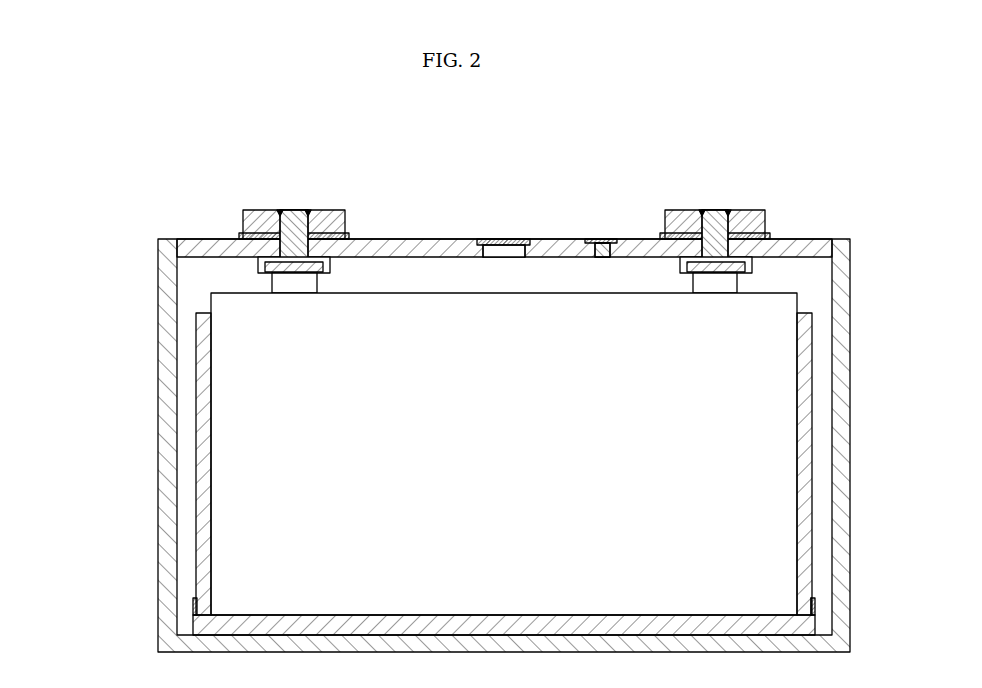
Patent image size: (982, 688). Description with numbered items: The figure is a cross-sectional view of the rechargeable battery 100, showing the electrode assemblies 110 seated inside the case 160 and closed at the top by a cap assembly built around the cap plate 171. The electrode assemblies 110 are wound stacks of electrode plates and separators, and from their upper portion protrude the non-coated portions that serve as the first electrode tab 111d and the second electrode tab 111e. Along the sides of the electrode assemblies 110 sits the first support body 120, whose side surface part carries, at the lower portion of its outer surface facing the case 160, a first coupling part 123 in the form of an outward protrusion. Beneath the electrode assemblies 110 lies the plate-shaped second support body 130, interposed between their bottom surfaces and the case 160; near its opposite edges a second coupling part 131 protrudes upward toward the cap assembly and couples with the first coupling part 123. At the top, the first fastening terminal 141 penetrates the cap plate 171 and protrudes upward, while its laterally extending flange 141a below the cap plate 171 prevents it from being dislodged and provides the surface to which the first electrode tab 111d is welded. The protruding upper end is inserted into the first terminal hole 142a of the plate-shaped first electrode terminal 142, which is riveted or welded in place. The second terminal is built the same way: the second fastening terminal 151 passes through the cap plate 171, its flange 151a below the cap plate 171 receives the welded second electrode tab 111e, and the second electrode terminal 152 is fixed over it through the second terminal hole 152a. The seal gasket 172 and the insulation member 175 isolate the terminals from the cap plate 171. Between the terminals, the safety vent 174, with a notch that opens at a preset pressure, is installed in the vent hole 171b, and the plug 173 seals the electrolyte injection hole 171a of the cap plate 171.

The rechargeable battery 100 is at (546, 379).
The electrode assemblies 110 is at (777, 442).
The first electrode tab 111d is at (730, 285).
The second electrode tab 111e is at (290, 285).
The first support body 120 is at (803, 513).
The first coupling part 123 is at (815, 607).
The second support body 130 is at (815, 625).
The second coupling part 131 is at (815, 598).
The first fastening terminal 141 is at (755, 208).
The flange 141a is at (690, 262).
The first electrode terminal 142 is at (672, 208).
The first terminal hole 142a is at (690, 208).
The second fastening terminal 151 is at (253, 208).
The flange 151a is at (330, 267).
The second electrode terminal 152 is at (338, 208).
The second terminal hole 152a is at (318, 206).
The case 160 is at (840, 363).
The cap plate 171 is at (431, 247).
The electrolyte injection hole 171a is at (600, 258).
The vent hole 171b is at (512, 258).
The seal gasket 172 is at (363, 257).
The plug 173 is at (592, 239).
The safety vent 174 is at (500, 238).
The insulation member 175 is at (740, 256).